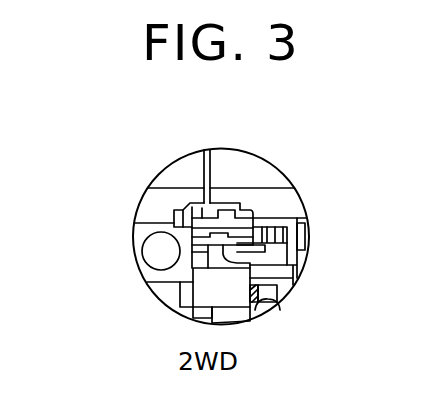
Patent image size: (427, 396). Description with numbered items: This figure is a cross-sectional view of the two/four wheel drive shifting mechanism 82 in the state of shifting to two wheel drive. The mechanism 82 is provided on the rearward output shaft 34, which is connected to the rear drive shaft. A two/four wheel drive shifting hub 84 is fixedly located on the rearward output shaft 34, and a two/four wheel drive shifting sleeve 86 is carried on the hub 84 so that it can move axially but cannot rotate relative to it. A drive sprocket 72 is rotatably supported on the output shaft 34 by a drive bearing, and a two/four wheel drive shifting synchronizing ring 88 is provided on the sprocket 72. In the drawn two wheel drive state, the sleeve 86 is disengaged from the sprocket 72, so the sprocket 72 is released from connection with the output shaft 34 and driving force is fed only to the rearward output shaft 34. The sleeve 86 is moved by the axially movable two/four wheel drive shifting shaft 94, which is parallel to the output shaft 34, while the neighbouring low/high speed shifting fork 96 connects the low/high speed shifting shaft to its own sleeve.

The two/four wheel drive shifting mechanism 82 is at (130, 199).
The two/four wheel drive shifting shaft 94 is at (224, 161).
The low/high speed shifting fork 96 is at (227, 200).
The two/four wheel drive shifting sleeve 86 is at (251, 216).
The two/four wheel drive shifting synchronizing ring 88 is at (262, 247).
The drive sprocket 72 is at (270, 278).
The two/four wheel drive shifting hub 84 is at (204, 288).
The rearward output shaft 34 is at (228, 317).